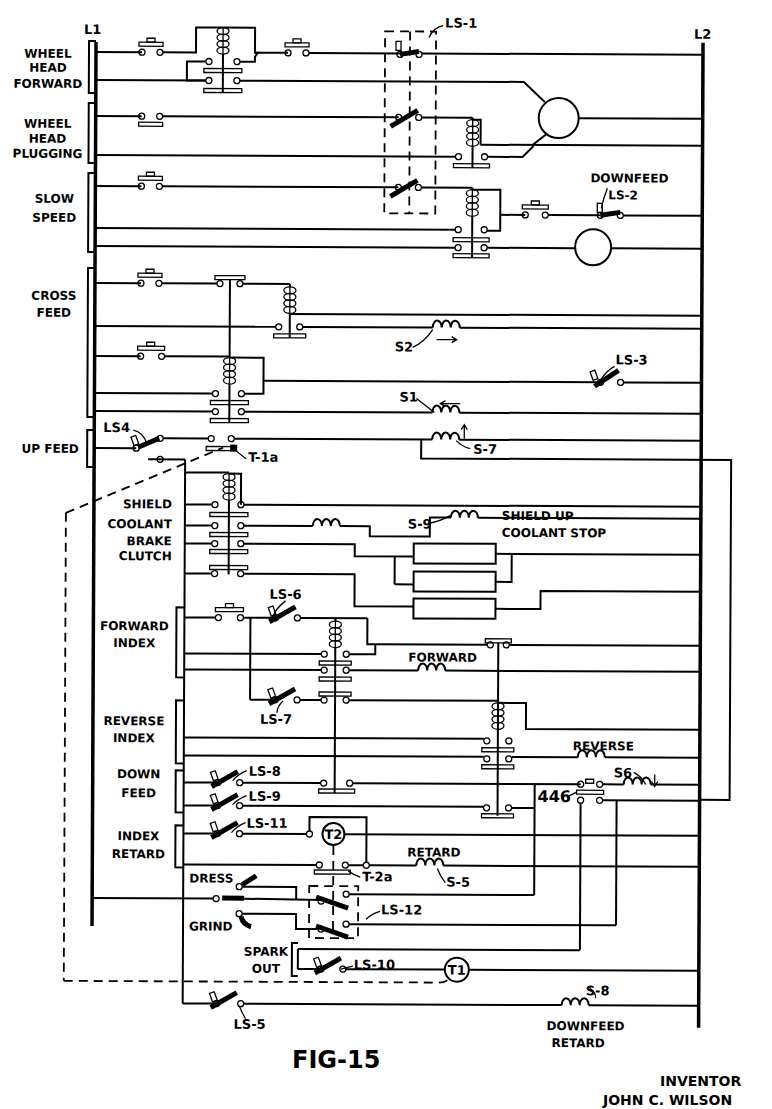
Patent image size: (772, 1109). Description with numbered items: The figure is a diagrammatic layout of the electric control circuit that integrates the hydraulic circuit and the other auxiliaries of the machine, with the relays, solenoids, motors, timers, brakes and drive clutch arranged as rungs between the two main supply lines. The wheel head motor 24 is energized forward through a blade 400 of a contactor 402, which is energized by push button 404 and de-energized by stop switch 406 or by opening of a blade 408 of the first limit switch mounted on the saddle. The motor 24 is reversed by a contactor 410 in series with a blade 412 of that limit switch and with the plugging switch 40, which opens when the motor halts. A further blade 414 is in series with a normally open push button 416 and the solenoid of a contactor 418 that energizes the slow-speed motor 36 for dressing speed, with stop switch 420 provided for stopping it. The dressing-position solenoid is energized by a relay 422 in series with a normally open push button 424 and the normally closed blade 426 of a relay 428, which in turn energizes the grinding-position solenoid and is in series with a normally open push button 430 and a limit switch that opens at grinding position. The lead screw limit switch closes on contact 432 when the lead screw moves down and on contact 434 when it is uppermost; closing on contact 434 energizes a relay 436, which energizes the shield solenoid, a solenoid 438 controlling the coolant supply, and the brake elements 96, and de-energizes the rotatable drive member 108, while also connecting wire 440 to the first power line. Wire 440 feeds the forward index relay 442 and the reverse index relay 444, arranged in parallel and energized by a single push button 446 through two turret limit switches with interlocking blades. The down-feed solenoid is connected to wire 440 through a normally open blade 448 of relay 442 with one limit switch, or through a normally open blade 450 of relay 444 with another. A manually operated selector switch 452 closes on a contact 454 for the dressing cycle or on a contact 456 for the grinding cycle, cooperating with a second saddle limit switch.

The wheel head motor 24 is at (578, 120).
The slow-speed motor 36 is at (607, 246).
The plugging switch 40 is at (163, 127).
The brake elements 96 is at (408, 553).
The rotatable drive member 108 is at (412, 618).
The blade of contactor 400 is at (237, 90).
The contactor 402 is at (225, 34).
The push button 404 is at (151, 38).
The stop switch 406 is at (304, 37).
The blade of limit switch LS-1 408 is at (398, 44).
The contactor 410 is at (480, 126).
The blade of switch LS-1 412 is at (392, 126).
The blade of switch LS-1 414 is at (393, 200).
The normally open push button 416 is at (164, 175).
The contactor 418 is at (470, 200).
The stop switch 420 is at (542, 206).
The relay 422 is at (303, 302).
The normally open push button 424 is at (151, 274).
The normally closed blade of relay 426 is at (233, 275).
The relay 428 is at (224, 366).
The normally open push button 430 is at (145, 358).
The contact 432 is at (162, 437).
The contact 434 is at (150, 460).
The relay 436 is at (226, 485).
The solenoid 438 is at (324, 517).
The wire 440 is at (184, 629).
The forward index relay 442 is at (332, 630).
The reverse index relay 444 is at (496, 712).
The push button 446 is at (225, 603).
The normally open blade of forward index relay 448 is at (350, 790).
The normally open blade of reverse index relay 450 is at (488, 814).
The manually operated selector switch 452 is at (267, 898).
The contact 454 is at (266, 884).
The contact 456 is at (277, 924).